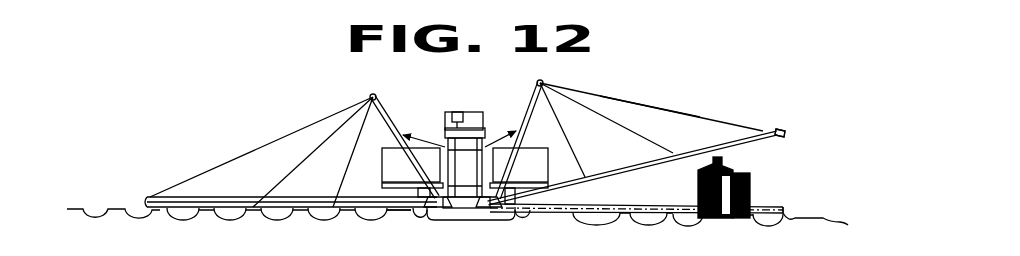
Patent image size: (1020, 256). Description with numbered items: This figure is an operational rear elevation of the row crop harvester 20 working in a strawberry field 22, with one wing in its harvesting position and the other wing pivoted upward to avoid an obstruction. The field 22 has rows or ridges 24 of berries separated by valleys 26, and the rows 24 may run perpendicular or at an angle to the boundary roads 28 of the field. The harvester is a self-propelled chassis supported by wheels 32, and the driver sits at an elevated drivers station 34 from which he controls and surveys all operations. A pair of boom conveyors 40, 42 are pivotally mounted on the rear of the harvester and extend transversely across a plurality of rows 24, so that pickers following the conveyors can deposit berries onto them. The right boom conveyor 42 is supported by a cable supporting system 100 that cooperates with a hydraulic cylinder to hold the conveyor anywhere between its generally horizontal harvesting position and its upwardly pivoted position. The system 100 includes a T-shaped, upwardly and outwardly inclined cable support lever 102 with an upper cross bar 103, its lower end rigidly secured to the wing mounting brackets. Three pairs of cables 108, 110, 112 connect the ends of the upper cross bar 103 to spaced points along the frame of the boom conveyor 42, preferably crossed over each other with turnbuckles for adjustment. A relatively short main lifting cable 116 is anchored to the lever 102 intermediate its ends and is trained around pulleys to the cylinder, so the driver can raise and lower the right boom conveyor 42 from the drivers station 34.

The row crop harvester 20 is at (320, 93).
The field 22 is at (107, 206).
The rows 24 is at (177, 204).
The valleys 26 is at (333, 216).
The boundary roads 28 is at (390, 214).
The wheels 32 is at (512, 222).
The elevated drivers station 34 is at (451, 109).
The boom conveyor 40 is at (155, 195).
The boom conveyor 42 is at (788, 204).
The cable supporting system 100 is at (642, 96).
The cable support lever 102 is at (536, 85).
The upper cross bar 103 is at (541, 79).
The cables 108 is at (573, 153).
The cables 110 is at (635, 133).
The cables 112 is at (663, 110).
The main lifting cable 116 is at (499, 127).